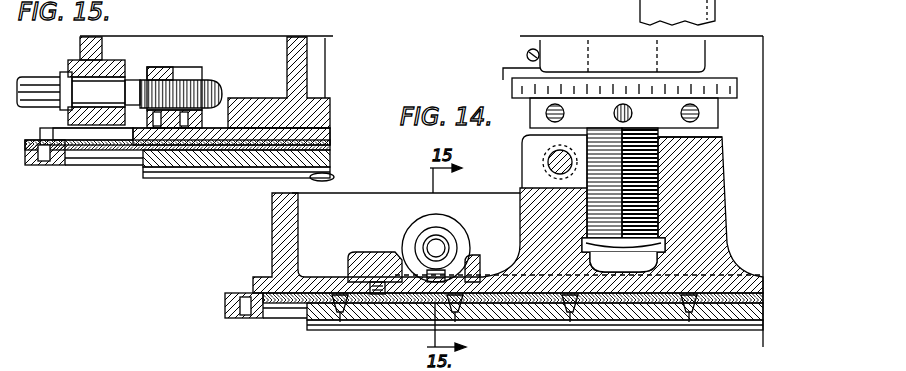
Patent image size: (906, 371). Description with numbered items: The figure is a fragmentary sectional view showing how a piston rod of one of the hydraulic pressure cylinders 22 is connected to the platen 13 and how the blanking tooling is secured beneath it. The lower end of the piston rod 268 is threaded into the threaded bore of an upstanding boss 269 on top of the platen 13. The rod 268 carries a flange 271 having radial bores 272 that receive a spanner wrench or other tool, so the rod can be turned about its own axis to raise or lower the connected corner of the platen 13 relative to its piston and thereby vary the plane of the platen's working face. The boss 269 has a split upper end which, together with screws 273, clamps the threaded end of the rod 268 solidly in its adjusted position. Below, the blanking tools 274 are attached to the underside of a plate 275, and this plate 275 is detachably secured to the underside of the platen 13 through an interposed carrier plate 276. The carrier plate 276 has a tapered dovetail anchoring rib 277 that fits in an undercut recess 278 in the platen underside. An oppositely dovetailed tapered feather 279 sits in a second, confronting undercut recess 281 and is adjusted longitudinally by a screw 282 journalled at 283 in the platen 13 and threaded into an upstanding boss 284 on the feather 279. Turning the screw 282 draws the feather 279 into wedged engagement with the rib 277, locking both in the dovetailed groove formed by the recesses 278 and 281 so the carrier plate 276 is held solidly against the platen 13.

In FIG. 15, the platen 13 is at (327, 53).
In FIG. 14, the platen 13 is at (272, 238).
In FIG. 14, the hydraulic pressure cylinder 22 is at (635, 62).
In FIG. 14, the piston rod 268 is at (655, 215).
In FIG. 14, the upstanding boss 269 is at (715, 155).
In FIG. 14, the flange 271 is at (533, 110).
In FIG. 14, the radial bores 272 is at (690, 113).
In FIG. 14, the screws 273 is at (558, 163).
In FIG. 15, the blanking tools 274 is at (325, 177).
In FIG. 14, the blanking tools 274 is at (365, 320).
In FIG. 14, the plate 275 is at (551, 320).
In FIG. 15, the carrier plate 276 is at (96, 150).
In FIG. 14, the carrier plate 276 is at (290, 305).
In FIG. 14, the tapered dovetail anchoring rib 277 is at (376, 290).
In FIG. 14, the undercut recess 278 is at (365, 291).
In FIG. 15, the tapered feather 279 is at (320, 137).
In FIG. 14, the tapered feather 279 is at (452, 285).
In FIG. 14, the second undercut recess 281 is at (468, 300).
In FIG. 15, the screw 282 is at (220, 85).
In FIG. 14, the screw 282 is at (438, 248).
In FIG. 15, the journal 283 is at (100, 83).
In FIG. 15, the upstanding boss 284 is at (182, 72).
In FIG. 14, the upstanding boss 284 is at (427, 228).